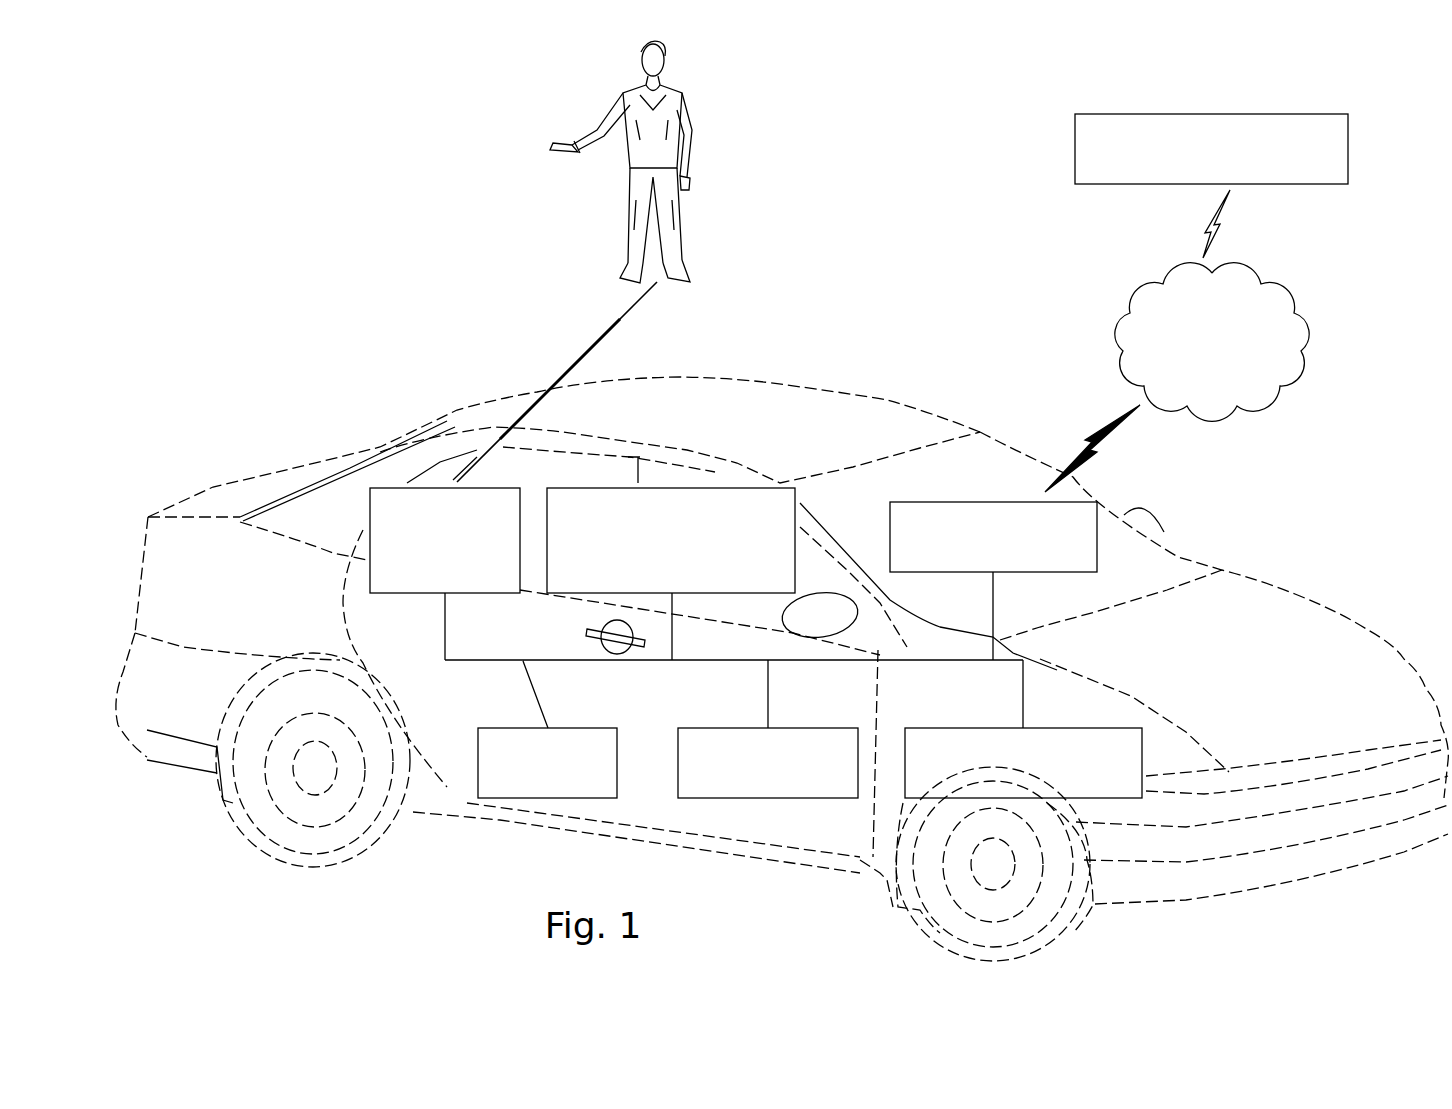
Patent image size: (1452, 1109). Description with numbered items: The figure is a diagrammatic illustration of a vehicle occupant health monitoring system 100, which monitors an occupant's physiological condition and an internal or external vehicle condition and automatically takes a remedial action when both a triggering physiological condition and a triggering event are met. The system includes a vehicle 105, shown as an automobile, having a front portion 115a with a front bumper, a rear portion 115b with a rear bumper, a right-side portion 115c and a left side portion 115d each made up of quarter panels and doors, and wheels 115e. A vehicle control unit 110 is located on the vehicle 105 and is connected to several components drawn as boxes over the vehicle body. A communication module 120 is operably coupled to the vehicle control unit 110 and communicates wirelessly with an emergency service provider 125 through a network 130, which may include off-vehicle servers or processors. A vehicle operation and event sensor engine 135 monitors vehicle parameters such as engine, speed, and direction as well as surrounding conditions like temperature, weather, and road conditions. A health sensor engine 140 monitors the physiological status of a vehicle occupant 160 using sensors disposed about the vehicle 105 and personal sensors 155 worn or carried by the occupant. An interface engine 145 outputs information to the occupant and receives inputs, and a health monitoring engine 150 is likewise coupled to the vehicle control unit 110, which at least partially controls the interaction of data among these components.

The vehicle occupant health monitoring system 100 is at (446, 237).
The vehicle 105 is at (945, 406).
The vehicle control unit 110 is at (738, 727).
The front portion 115a is at (1371, 863).
The rear portion 115b is at (143, 760).
The right-side portion 115c is at (510, 818).
The left side portion 115d is at (847, 393).
The wheels 115e is at (293, 857).
The communication module 120 is at (983, 500).
The emergency service provider 125 is at (1350, 150).
The network 130 is at (1303, 320).
The vehicle operation and event sensor engine 135 is at (705, 487).
The health sensor engine 140 is at (410, 597).
The interface engine 145 is at (513, 727).
The health monitoring engine 150 is at (993, 727).
The personal sensors 155 is at (553, 140).
The vehicle occupant 160 is at (694, 116).